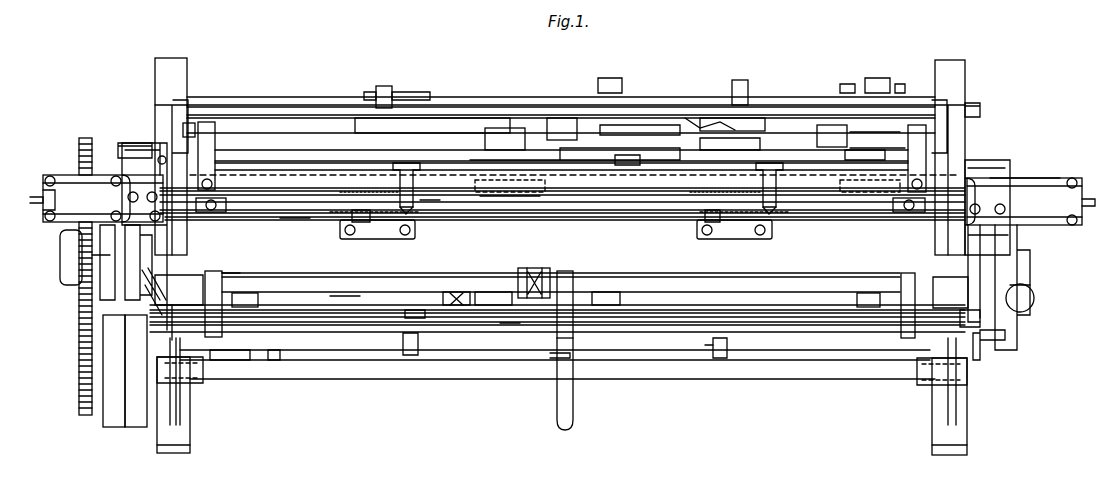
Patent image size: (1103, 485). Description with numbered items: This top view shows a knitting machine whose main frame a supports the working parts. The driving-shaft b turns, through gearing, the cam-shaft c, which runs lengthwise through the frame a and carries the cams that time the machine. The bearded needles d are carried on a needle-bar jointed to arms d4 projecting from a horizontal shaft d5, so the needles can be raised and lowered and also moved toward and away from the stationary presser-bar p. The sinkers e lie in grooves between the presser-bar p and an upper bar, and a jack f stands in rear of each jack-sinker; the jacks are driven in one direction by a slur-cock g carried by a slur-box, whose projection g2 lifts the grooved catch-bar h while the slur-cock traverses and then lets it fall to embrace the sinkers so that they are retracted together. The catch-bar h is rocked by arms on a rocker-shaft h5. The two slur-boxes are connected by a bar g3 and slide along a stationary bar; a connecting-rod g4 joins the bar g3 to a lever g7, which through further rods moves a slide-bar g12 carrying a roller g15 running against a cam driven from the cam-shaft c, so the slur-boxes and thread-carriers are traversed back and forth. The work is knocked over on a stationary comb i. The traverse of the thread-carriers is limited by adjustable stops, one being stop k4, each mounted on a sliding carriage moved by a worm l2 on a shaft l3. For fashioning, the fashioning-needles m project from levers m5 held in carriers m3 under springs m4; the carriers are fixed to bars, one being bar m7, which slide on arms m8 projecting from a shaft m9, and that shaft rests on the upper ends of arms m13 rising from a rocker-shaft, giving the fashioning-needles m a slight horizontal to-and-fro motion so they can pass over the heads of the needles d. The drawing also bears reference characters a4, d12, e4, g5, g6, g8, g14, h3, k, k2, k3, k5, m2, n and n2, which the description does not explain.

The main frame a is at (561, 256).
The arm plate a4 is at (432, 235).
The driving-shaft b is at (626, 281).
The cam-shaft c is at (560, 194).
The barbed needles d is at (556, 274).
The arms d4 is at (606, 298).
The horizontal shaft d5 is at (345, 298).
The pendulum d12 is at (561, 384).
The sinkers e is at (550, 185).
The cord end e4 is at (606, 202).
The jack f is at (587, 184).
The slur-cock g is at (674, 191).
The projection of slur-box g2 is at (687, 182).
The bar g3 is at (509, 155).
The connecting-rod g4 is at (851, 142).
The block g5 is at (627, 153).
The plate g6 is at (730, 144).
The lever g7 is at (710, 118).
The block g8 is at (505, 133).
The slide-bar g12 is at (875, 126).
The block g14 is at (562, 126).
The roller g15 is at (640, 125).
The catch-bar h is at (558, 147).
The rail h3 is at (877, 141).
The rocker-shaft h5 is at (562, 158).
The stationary comb i is at (433, 236).
The cylinder k is at (549, 130).
The frame plate k2 is at (136, 371).
The plate k3 is at (189, 124).
The adjustable stop k4 is at (133, 270).
The frame plate k5 is at (114, 371).
The worm l2 is at (556, 94).
The worm-shaft l3 is at (751, 86).
The fashioning-needles m is at (705, 347).
The block m2 is at (728, 330).
The carrier m3 is at (534, 283).
The spring m4 is at (557, 302).
The lever m5 is at (510, 323).
The bar m7 is at (415, 309).
The arms m8 is at (412, 348).
The shaft m9 is at (245, 349).
The arms m13 is at (566, 268).
The shaft n is at (101, 249).
The wheel n2 is at (1023, 298).
The presser-bar p is at (964, 318).